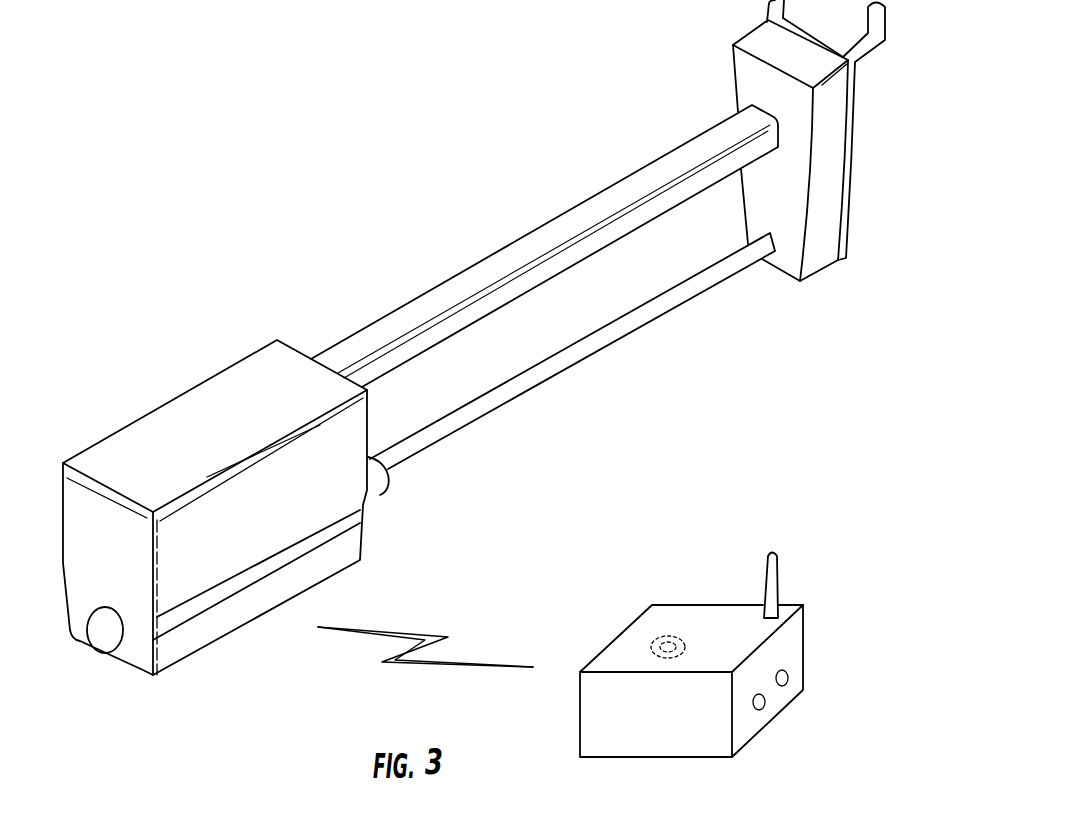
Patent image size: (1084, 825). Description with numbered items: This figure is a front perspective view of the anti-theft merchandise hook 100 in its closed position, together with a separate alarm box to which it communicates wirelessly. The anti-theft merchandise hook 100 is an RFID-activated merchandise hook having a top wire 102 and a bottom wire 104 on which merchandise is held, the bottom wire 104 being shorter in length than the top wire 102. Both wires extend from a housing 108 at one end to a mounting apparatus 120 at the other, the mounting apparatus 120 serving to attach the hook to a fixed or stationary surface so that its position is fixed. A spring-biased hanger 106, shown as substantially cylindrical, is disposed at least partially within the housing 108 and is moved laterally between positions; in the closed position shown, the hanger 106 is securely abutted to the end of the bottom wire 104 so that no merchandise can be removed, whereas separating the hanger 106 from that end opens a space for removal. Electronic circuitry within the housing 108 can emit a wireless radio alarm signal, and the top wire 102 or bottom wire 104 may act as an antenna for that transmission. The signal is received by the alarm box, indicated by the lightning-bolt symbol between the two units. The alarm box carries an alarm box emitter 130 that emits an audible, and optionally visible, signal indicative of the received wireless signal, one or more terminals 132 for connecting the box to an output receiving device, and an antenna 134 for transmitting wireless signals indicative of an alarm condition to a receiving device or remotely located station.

The anti-theft merchandise hook 100 is at (316, 96).
The top wire 102 is at (527, 235).
The bottom wire 104 is at (571, 366).
The spring-biased hanger 106 is at (385, 497).
The housing 108 is at (150, 420).
The mounting apparatus 120 is at (855, 185).
The alarm box emitter 130 is at (658, 640).
The terminals 132 is at (790, 678).
The antenna 134 is at (777, 577).